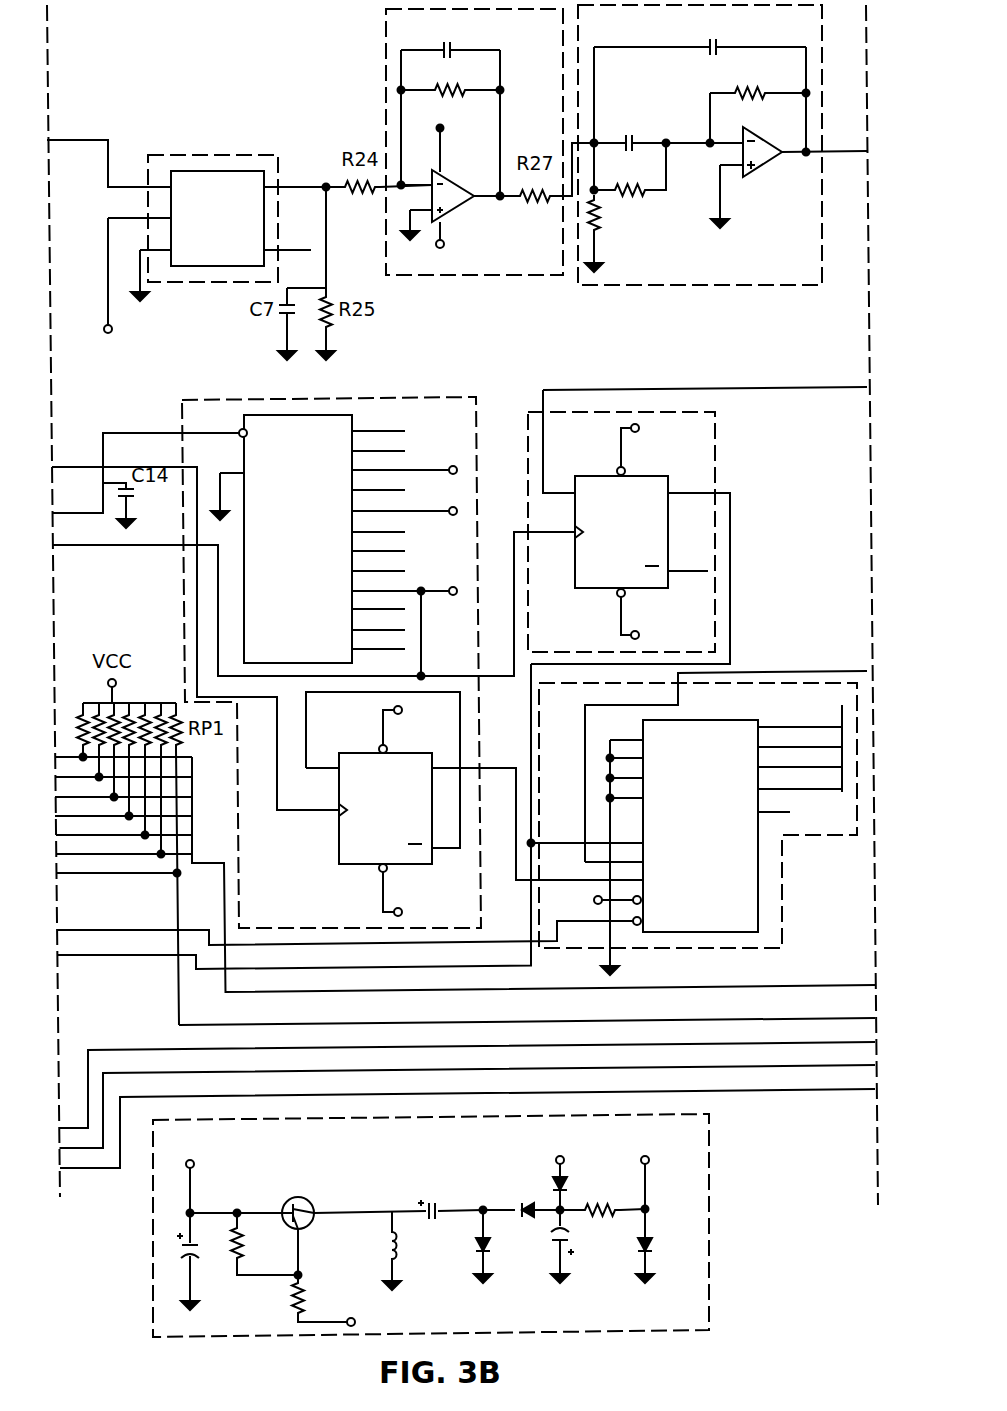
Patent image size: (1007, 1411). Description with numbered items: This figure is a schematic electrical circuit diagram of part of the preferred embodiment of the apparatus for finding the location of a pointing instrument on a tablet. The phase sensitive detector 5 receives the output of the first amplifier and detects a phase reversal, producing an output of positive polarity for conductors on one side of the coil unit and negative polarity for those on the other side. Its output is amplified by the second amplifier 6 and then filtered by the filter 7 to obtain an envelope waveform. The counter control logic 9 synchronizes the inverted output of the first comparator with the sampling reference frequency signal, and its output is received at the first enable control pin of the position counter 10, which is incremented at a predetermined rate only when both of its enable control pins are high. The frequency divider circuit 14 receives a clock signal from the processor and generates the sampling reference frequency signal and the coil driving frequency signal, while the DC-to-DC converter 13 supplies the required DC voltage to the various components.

The phase sensitive detector 5 is at (228, 161).
The second amplifier 6 is at (386, 75).
The filter 7 is at (697, 262).
The counter control logic 9 is at (558, 438).
The position counter 10 is at (853, 672).
The DC-to-DC converter 13 is at (680, 1205).
The frequency divider circuit 14 is at (387, 404).